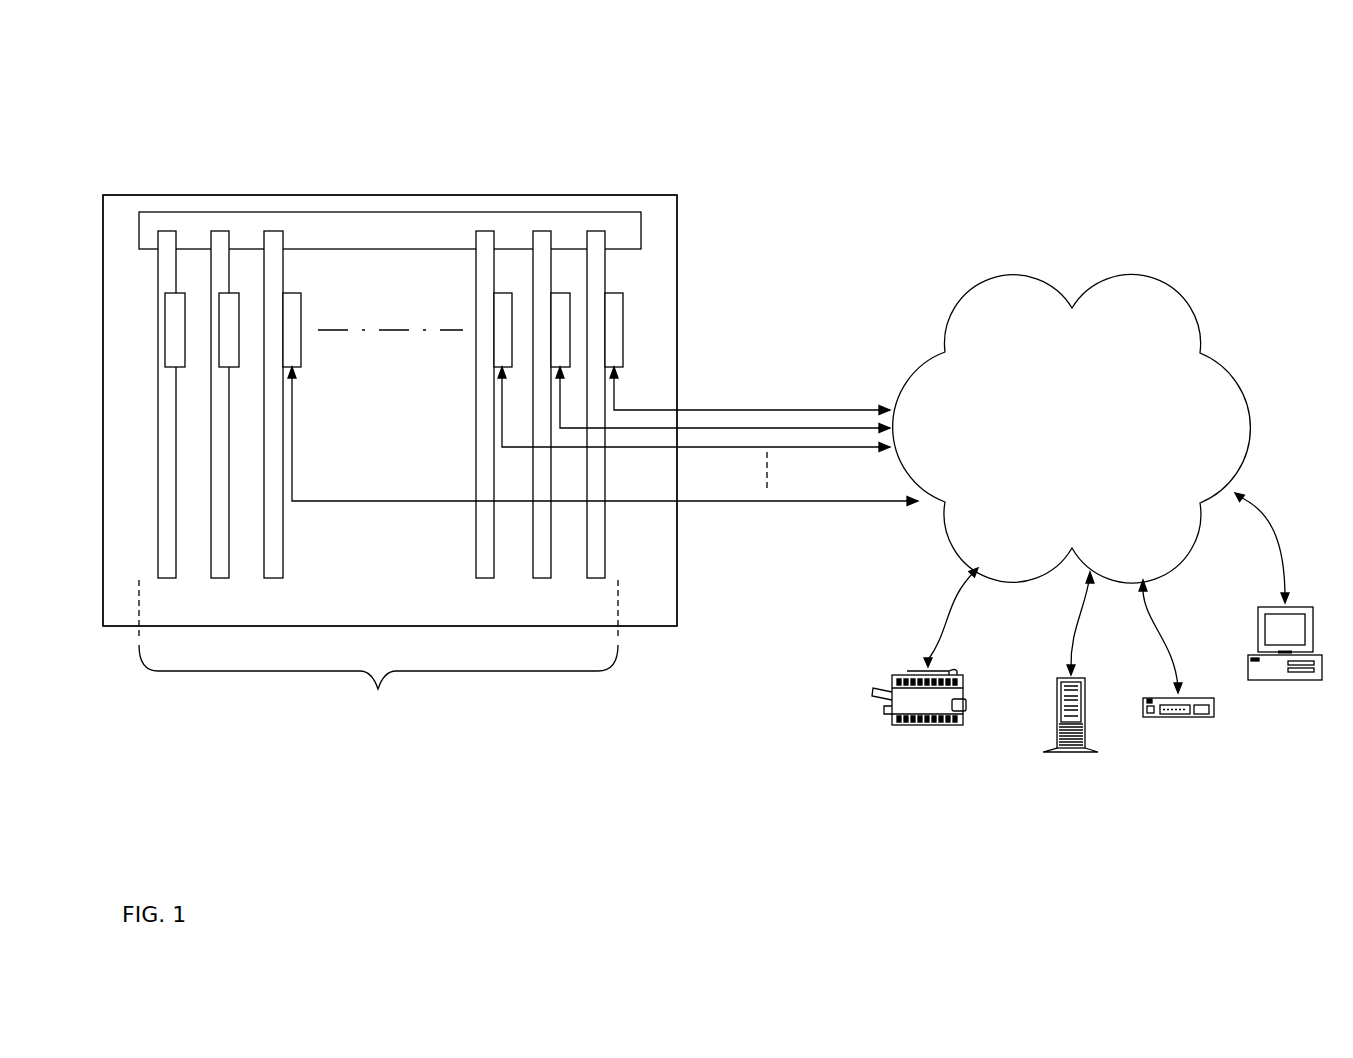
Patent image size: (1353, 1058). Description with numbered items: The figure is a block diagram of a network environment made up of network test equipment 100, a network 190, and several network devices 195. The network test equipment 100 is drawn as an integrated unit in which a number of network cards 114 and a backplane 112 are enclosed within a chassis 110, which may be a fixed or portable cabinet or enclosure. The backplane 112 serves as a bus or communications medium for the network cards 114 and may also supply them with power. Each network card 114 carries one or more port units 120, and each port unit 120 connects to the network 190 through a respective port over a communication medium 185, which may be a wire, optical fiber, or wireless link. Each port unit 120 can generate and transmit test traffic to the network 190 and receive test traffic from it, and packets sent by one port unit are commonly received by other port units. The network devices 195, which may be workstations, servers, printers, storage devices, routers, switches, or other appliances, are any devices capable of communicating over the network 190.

The network test equipment 100 is at (300, 140).
The chassis 110 is at (390, 195).
The backplane 112 is at (587, 212).
The network cards 114 is at (378, 490).
The port unit 120 is at (623, 330).
The communication medium 185 is at (753, 410).
The network 190 is at (1072, 429).
The network devices 195 is at (1097, 651).